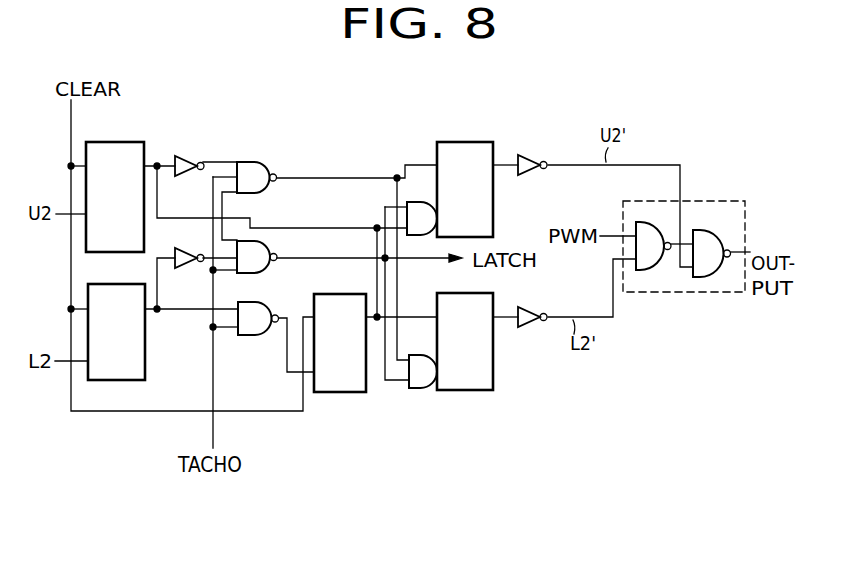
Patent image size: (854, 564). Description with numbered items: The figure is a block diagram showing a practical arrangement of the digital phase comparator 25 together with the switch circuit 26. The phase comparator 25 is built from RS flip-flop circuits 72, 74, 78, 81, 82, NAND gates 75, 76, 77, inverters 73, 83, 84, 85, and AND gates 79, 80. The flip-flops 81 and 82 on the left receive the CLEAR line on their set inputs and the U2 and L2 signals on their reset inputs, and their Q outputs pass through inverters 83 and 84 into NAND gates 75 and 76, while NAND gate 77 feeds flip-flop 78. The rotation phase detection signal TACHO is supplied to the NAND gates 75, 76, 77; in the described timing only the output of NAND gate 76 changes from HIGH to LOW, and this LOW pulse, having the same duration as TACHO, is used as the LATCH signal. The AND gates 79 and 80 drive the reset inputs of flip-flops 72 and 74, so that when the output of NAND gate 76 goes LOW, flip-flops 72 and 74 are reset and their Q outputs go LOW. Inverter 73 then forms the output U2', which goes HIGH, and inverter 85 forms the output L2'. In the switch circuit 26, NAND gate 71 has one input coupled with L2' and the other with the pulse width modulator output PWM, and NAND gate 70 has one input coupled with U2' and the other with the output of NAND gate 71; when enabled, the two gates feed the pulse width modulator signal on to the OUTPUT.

The phase comparator 25 is at (528, 96).
The switch circuit 26 is at (640, 293).
The NAND gate 70 is at (709, 248).
The NAND gate 71 is at (638, 226).
The RS flip-flop circuit 72 is at (471, 152).
The inverter 73 is at (524, 160).
The RS flip-flop circuit 74 is at (468, 392).
The NAND gate 75 is at (265, 176).
The NAND gate 76 is at (256, 247).
The NAND gate 77 is at (262, 312).
The RS flip-flop circuit 78 is at (347, 392).
The AND gate 79 is at (412, 204).
The AND gate 80 is at (420, 380).
The RS flip-flop circuit 81 is at (123, 151).
The RS flip-flop circuit 82 is at (116, 293).
The inverter 83 is at (184, 159).
The inverter 84 is at (186, 270).
The inverter 85 is at (524, 326).